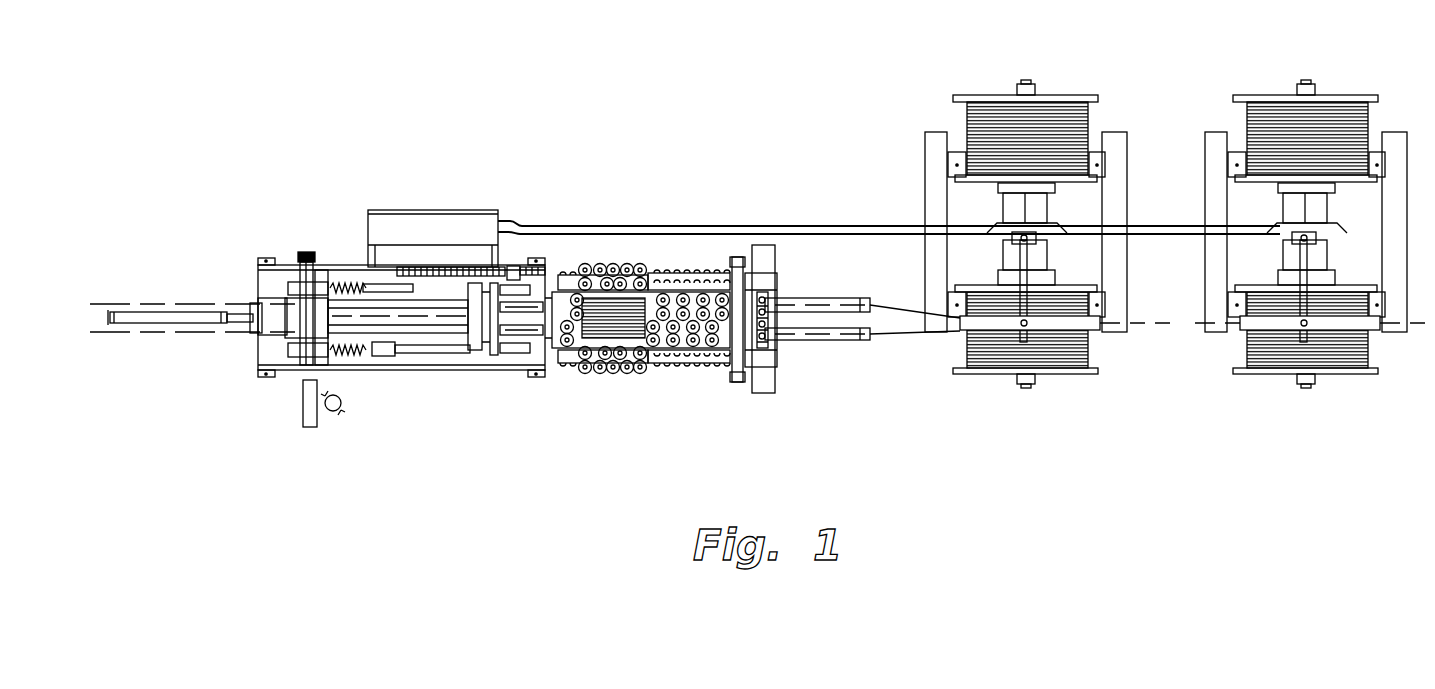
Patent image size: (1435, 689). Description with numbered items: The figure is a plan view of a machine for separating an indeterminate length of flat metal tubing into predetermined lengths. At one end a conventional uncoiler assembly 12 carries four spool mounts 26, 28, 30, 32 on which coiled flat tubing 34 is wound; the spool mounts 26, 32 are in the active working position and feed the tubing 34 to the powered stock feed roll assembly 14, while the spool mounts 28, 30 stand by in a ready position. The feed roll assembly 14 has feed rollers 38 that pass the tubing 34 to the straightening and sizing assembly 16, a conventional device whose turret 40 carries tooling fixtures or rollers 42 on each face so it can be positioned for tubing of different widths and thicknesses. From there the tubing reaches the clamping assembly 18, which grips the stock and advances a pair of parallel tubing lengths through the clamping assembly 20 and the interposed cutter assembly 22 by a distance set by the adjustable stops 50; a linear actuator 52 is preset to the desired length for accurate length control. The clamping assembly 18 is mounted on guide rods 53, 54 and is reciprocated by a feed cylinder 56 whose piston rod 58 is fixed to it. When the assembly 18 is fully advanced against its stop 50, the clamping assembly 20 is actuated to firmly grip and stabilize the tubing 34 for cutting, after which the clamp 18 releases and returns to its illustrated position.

The uncoiler assembly 12 is at (1043, 251).
The stock feed roll assembly 14 is at (768, 395).
The straightening and sizing assembly 16 is at (608, 375).
The clamping assembly 18 is at (477, 360).
The clamping assembly 20 is at (322, 264).
The cutter assembly 22 is at (294, 249).
The spool mount 26 is at (1065, 374).
The spool mount 28 is at (1066, 95).
The spool mount 30 is at (1306, 113).
The spool mount 32 is at (1305, 359).
The coiled flat tubing 34 is at (1088, 350).
The feed rollers 38 is at (767, 337).
The turret 40 is at (714, 365).
The tooling fixtures or rollers 42 is at (697, 273).
The adjustable stop 50 is at (363, 287).
The linear actuator 52 is at (440, 303).
The guide rod 53 is at (467, 252).
The guide rod 54 is at (437, 343).
The feed cylinder 56 is at (177, 312).
The piston rod 58 is at (412, 317).